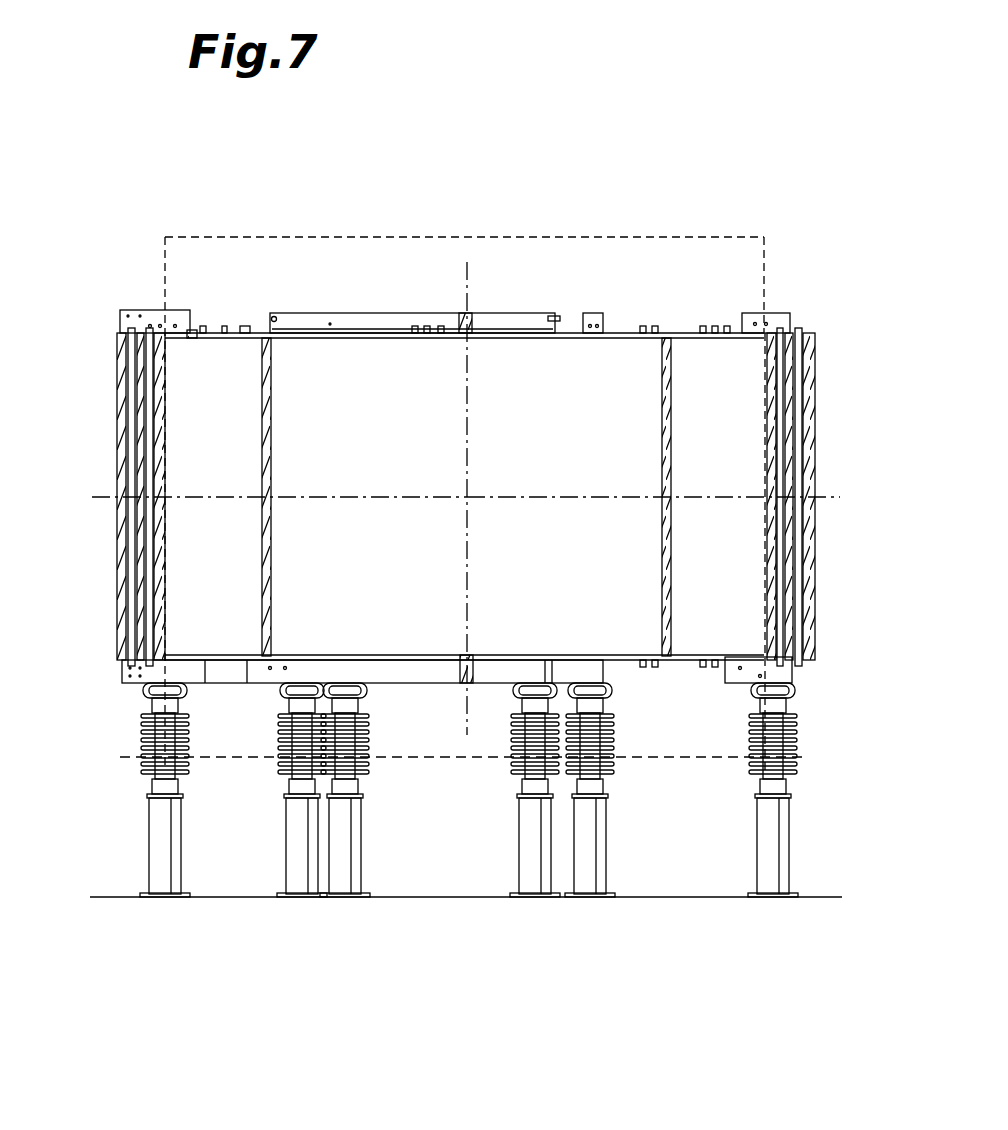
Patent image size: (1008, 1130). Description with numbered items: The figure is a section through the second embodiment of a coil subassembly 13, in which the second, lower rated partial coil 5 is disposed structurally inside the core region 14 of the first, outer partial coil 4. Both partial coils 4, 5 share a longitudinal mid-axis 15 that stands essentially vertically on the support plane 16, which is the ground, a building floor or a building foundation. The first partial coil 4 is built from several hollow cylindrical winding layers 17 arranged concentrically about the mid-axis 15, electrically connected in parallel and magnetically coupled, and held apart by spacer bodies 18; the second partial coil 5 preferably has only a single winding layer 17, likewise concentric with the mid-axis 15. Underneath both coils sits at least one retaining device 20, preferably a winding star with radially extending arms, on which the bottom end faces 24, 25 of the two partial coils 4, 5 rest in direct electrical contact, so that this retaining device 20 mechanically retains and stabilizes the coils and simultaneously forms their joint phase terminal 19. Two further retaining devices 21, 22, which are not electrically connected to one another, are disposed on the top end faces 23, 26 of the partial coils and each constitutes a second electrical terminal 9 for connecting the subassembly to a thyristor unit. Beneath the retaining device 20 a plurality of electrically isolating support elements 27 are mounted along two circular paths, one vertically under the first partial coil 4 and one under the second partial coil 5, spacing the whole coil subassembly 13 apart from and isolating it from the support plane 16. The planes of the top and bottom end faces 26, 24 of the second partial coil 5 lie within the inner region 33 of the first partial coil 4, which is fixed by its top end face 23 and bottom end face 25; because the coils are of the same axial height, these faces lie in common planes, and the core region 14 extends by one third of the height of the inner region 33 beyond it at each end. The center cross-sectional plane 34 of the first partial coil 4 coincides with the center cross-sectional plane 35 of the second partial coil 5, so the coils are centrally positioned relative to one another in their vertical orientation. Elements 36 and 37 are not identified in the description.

The coil subassembly 13 is at (632, 175).
The core region 14 is at (563, 237).
The retaining device 22 is at (362, 310).
The longitudinal mid-axis 15 is at (467, 262).
The second partial coil 5 is at (673, 397).
The top end face 26 is at (660, 333).
The retaining device 21 is at (145, 287).
The winding layer 17 is at (265, 337).
The second electrical terminal 9 is at (117, 310).
The first partial coil 4 is at (820, 450).
The top end face 23 is at (813, 330).
The bottom end face 25 is at (810, 662).
The center cross-sectional plane 34 is at (107, 492).
The center cross-sectional plane 35 is at (825, 500).
The inner region 33 is at (215, 628).
The bottom end face 24 is at (665, 660).
The spacer body 18 is at (120, 660).
The retaining device 20 is at (452, 690).
The joint phase terminal 19 is at (128, 687).
The electrically isolating support element 27 is at (268, 797).
The insulator shed portion 36 is at (355, 777).
The insulator column 37 is at (343, 880).
The support plane 16 is at (810, 897).